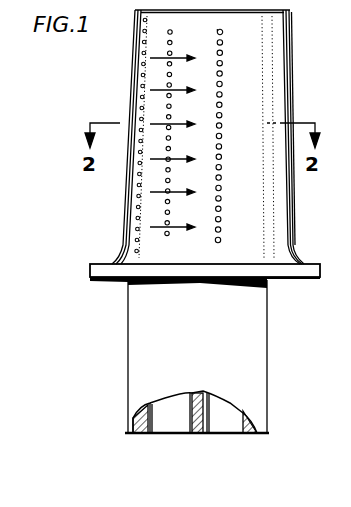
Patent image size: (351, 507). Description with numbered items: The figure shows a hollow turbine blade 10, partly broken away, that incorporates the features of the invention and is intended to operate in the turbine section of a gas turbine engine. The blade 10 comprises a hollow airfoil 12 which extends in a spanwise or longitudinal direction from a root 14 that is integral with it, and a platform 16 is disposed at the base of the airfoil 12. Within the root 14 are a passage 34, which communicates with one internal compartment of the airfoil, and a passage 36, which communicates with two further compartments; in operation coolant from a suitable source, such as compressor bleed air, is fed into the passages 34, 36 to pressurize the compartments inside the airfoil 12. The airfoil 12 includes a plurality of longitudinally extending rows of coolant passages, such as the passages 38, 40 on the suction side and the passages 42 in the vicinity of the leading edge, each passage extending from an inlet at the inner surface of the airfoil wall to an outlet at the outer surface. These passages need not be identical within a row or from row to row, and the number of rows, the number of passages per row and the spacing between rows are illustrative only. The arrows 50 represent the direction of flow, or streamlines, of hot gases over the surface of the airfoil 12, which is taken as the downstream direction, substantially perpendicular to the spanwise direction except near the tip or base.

The turbine blade 10 is at (104, 70).
The hollow airfoil 12 is at (248, 197).
The root 14 is at (209, 327).
The platform 16 is at (90, 269).
The passage 34 is at (160, 420).
The passage 36 is at (216, 420).
The coolant passages 38 is at (224, 88).
The coolant passages 40 is at (172, 30).
The coolant passages 42 is at (140, 80).
The arrows 50 is at (178, 60).